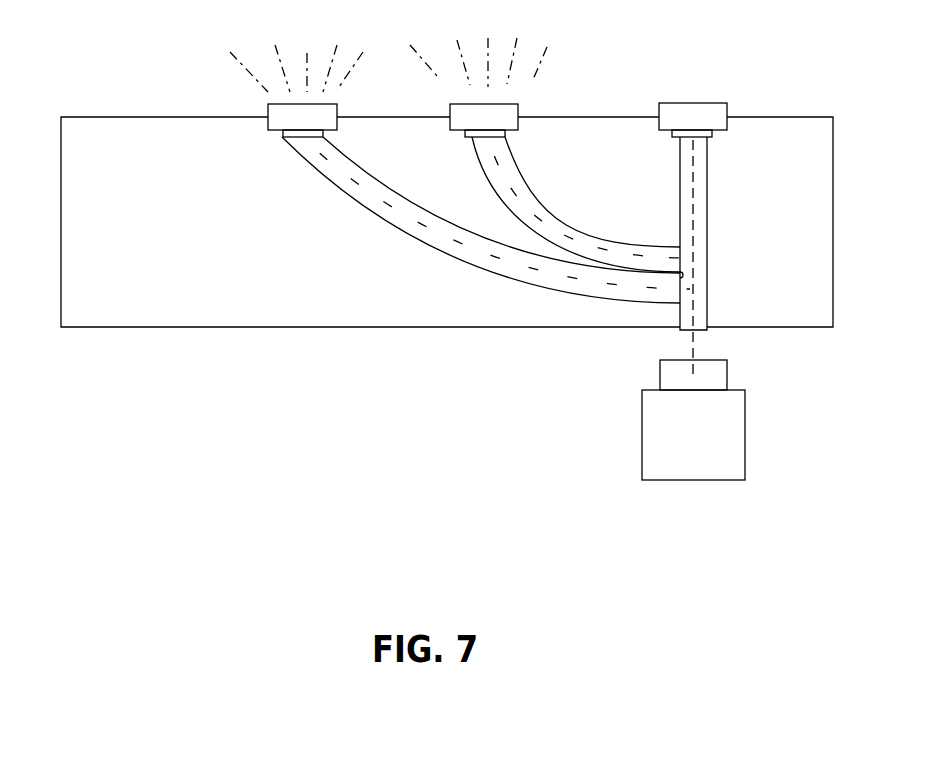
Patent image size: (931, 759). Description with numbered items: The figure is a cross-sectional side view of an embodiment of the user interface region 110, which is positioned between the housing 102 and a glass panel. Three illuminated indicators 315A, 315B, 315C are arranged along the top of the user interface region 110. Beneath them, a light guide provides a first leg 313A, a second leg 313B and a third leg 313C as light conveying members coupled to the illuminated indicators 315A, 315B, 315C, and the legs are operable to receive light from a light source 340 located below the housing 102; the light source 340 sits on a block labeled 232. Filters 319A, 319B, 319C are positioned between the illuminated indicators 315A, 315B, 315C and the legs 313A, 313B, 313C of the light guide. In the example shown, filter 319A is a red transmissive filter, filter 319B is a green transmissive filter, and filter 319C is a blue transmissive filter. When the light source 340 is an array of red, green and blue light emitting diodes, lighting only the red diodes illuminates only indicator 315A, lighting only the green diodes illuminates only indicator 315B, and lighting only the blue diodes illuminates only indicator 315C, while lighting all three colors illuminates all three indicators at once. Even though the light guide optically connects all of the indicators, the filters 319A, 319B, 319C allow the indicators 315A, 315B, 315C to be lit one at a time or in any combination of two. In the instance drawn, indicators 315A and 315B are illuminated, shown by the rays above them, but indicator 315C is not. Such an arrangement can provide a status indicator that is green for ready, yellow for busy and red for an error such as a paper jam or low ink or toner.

The housing 102 is at (77, 117).
The user interface region 110 is at (259, 377).
The illuminated indicator 315A is at (268, 105).
The illuminated indicator 315B is at (450, 105).
The illuminated indicator 315C is at (659, 104).
The filter 319A is at (323, 133).
The filter 319B is at (507, 133).
The filter 319C is at (713, 132).
The first leg 313A is at (305, 162).
The second leg 313B is at (540, 212).
The third leg 313C is at (708, 210).
The light source 340 is at (728, 382).
The light source 232 is at (715, 456).